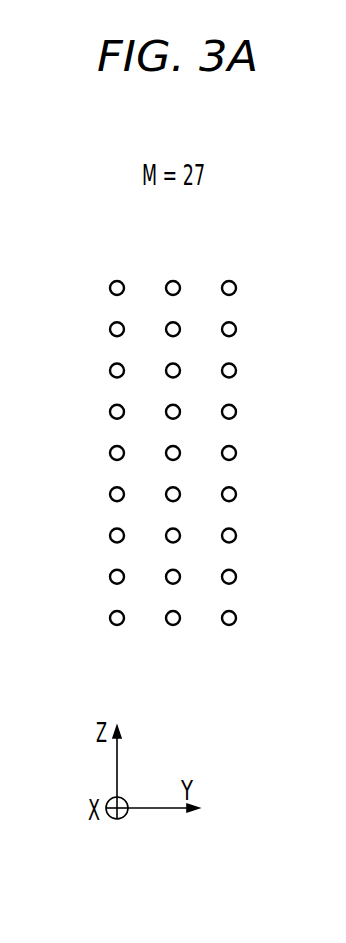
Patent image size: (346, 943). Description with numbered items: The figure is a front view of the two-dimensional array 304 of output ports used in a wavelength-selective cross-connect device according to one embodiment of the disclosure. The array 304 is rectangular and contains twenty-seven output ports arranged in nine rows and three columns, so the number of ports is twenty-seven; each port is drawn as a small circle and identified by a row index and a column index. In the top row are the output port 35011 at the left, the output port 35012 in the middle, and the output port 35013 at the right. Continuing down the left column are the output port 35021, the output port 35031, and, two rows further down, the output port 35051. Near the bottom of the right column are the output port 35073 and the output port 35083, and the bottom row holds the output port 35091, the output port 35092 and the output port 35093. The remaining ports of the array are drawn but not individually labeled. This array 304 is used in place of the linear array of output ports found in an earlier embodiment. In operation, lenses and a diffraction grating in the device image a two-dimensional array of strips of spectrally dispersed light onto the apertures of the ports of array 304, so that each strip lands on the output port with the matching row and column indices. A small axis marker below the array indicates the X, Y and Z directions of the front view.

The two-dimensional array 304 is at (190, 111).
The output port 35011 is at (109, 288).
The output port 35012 is at (172, 281).
The output port 35013 is at (237, 289).
The output port 35021 is at (109, 329).
The output port 35031 is at (109, 370).
The output port 35051 is at (109, 453).
The output port 35073 is at (237, 537).
The output port 35083 is at (237, 578).
The output port 35091 is at (109, 618).
The output port 35092 is at (178, 624).
The output port 35093 is at (237, 620).